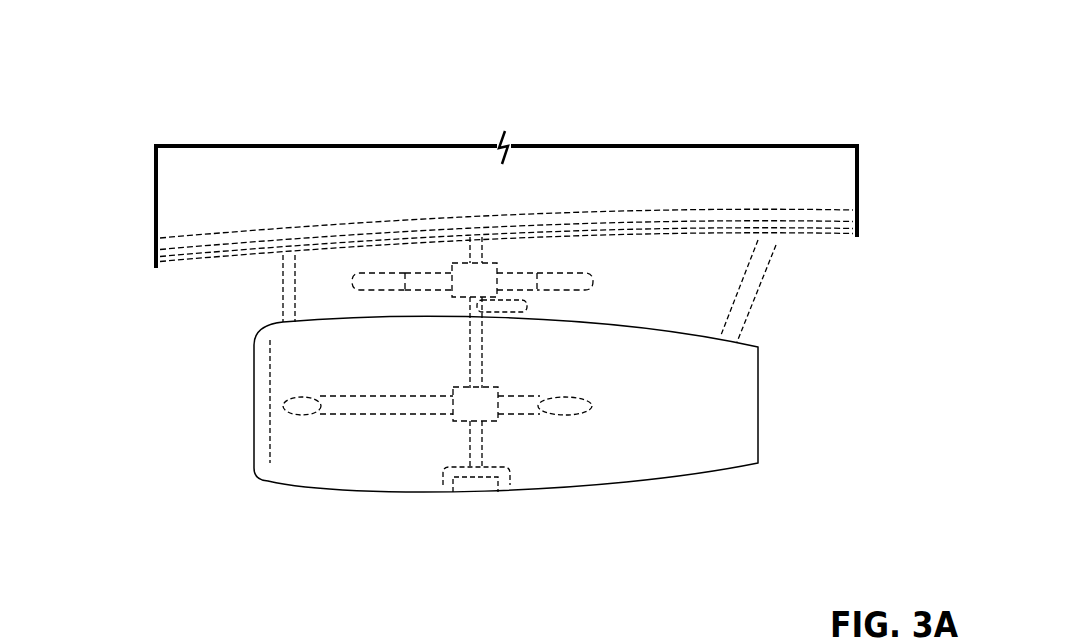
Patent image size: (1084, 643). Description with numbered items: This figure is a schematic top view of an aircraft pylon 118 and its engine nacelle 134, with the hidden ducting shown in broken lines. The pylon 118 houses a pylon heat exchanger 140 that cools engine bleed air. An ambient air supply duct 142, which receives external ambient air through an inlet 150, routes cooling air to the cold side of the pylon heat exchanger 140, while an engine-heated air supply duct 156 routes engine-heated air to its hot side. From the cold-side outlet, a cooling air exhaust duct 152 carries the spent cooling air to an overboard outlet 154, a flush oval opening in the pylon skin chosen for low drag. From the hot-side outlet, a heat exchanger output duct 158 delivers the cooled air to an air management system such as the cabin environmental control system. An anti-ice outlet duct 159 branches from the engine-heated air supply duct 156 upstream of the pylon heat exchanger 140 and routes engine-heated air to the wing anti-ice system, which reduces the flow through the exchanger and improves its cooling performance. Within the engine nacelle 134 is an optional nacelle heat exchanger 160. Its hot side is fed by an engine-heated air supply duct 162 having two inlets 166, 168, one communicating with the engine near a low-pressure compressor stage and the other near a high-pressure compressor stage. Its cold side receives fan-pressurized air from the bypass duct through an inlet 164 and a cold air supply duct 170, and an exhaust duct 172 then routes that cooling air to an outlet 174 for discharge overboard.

The pylon 118 is at (720, 267).
The engine nacelle 134 is at (740, 388).
The pylon heat exchanger 140 is at (490, 277).
The ambient air supply duct 142 is at (420, 278).
The inlet 150 is at (370, 278).
The cooling air exhaust duct 152 is at (530, 277).
The overboard outlet 154 is at (580, 277).
The engine-heated air supply duct 156 is at (470, 327).
The heat exchanger output duct 158 is at (468, 250).
The anti-ice outlet duct 159 is at (507, 307).
The nacelle heat exchanger 160 is at (460, 415).
The engine-heated air supply duct 162 is at (473, 440).
The inlet 164 is at (300, 403).
The inlet 166 is at (445, 483).
The inlet 168 is at (507, 483).
The cold air supply duct 170 is at (353, 407).
The exhaust duct 172 is at (522, 408).
The outlet 174 is at (583, 408).